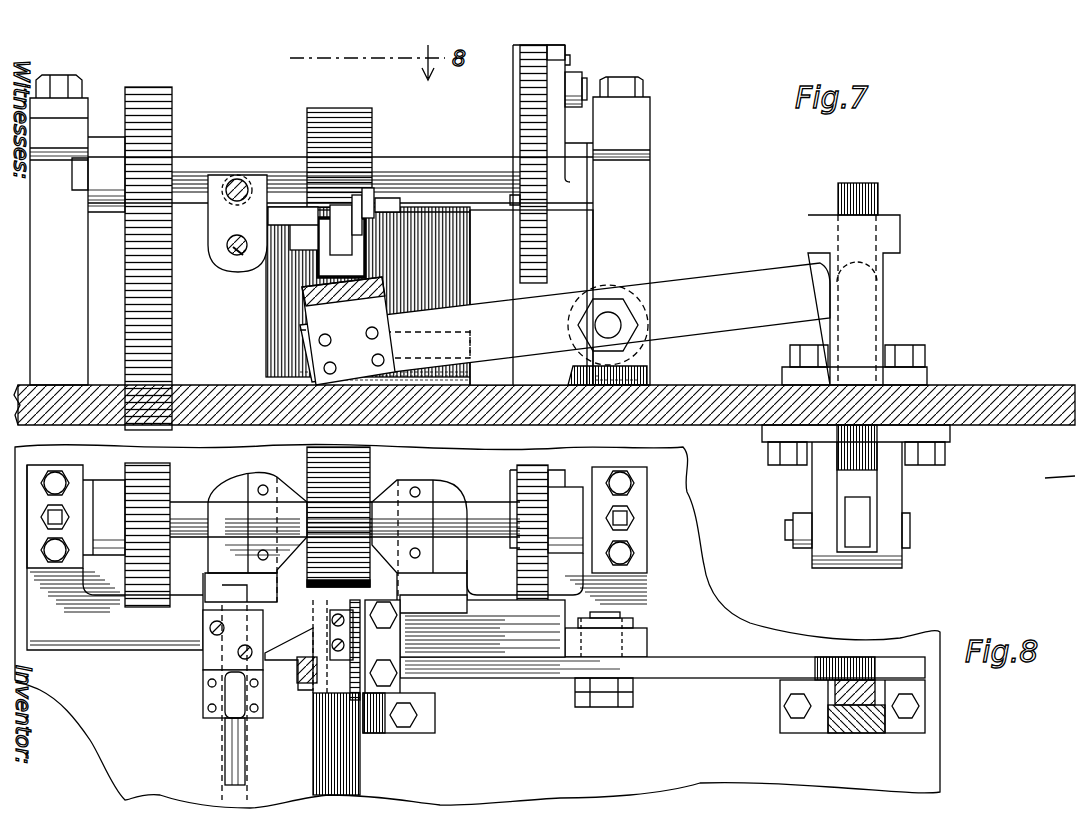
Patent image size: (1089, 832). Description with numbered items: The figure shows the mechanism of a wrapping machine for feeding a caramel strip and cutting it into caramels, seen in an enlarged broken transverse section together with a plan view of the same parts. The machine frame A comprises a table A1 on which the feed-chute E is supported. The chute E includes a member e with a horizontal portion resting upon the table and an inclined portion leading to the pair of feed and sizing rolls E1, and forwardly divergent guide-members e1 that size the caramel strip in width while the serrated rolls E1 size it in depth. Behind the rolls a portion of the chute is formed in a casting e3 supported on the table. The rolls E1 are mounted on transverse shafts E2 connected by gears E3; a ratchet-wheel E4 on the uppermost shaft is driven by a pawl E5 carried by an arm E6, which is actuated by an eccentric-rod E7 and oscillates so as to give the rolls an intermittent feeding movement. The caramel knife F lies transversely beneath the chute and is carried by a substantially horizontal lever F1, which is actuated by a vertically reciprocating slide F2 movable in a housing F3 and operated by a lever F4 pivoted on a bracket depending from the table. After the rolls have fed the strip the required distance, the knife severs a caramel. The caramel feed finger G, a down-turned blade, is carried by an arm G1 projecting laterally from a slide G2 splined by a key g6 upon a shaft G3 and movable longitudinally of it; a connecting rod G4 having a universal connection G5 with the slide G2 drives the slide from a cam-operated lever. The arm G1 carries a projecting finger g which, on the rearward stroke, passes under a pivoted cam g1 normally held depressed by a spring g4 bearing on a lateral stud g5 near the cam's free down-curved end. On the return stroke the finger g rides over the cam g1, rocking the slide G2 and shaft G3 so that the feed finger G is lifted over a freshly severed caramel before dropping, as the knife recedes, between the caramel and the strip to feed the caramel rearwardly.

In FIG. 7, the frame of the machine A is at (544, 413).
In FIG. 8, the frame of the machine A is at (705, 759).
In FIG. 7, the table A1 is at (720, 394).
In FIG. 7, the feed-chute E is at (429, 296).
In FIG. 8, the feed-chute E is at (318, 732).
In FIG. 7, the feed and sizing rolls E1 is at (314, 110).
In FIG. 8, the feed and sizing rolls E1 is at (372, 453).
In FIG. 7, the transverse shafts E2 is at (212, 166).
In FIG. 7, the gears E3 is at (130, 310).
In FIG. 8, the gears E3 is at (137, 600).
In FIG. 7, the ratchet-wheel E4 is at (532, 112).
In FIG. 8, the ratchet-wheel E4 is at (549, 578).
In FIG. 7, the pawl E5 is at (548, 50).
In FIG. 7, the arm E6 is at (560, 80).
In FIG. 8, the arm E6 is at (553, 482).
In FIG. 7, the eccentric-rod E7 is at (348, 331).
In FIG. 8, the chute member e is at (256, 535).
In FIG. 8, the guide-members e1 is at (368, 466).
In FIG. 7, the casting e3 is at (455, 265).
In FIG. 8, the caramel knife F is at (300, 682).
In FIG. 7, the lever F1 is at (565, 324).
In FIG. 8, the lever F1 is at (677, 675).
In FIG. 7, the vertically reciprocating slide F2 is at (878, 203).
In FIG. 8, the vertically reciprocating slide F2 is at (880, 678).
In FIG. 7, the housing F3 is at (888, 318).
In FIG. 8, the housing F3 is at (840, 733).
In FIG. 7, the lever F4 is at (862, 512).
In FIG. 7, the caramel feed finger G is at (350, 253).
In FIG. 8, the caramel feed finger G is at (355, 655).
In FIG. 7, the arm G1 is at (292, 205).
In FIG. 8, the arm G1 is at (330, 628).
In FIG. 7, the slide G2 is at (237, 223).
In FIG. 8, the slide G2 is at (203, 668).
In FIG. 7, the shaft G3 is at (226, 246).
In FIG. 8, the shaft G3 is at (230, 792).
In FIG. 7, the connecting rod G4 is at (238, 178).
In FIG. 8, the connecting rod G4 is at (230, 763).
In FIG. 8, the universal connection G5 is at (222, 702).
In FIG. 8, the projecting finger g is at (360, 607).
In FIG. 7, the cam g1 is at (373, 172).
In FIG. 8, the cam g1 is at (372, 660).
In FIG. 7, the spring g4 is at (400, 205).
In FIG. 8, the spring g4 is at (407, 697).
In FIG. 7, the lateral stud g5 is at (376, 200).
In FIG. 8, the lateral stud g5 is at (378, 733).
In FIG. 7, the key g6 is at (233, 250).